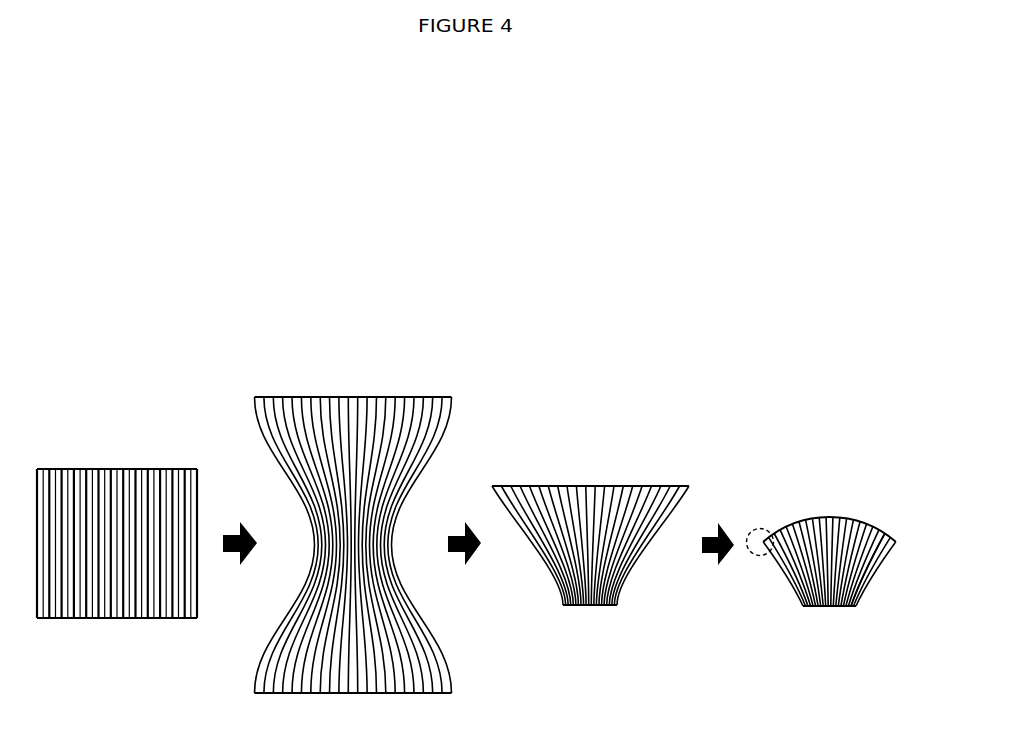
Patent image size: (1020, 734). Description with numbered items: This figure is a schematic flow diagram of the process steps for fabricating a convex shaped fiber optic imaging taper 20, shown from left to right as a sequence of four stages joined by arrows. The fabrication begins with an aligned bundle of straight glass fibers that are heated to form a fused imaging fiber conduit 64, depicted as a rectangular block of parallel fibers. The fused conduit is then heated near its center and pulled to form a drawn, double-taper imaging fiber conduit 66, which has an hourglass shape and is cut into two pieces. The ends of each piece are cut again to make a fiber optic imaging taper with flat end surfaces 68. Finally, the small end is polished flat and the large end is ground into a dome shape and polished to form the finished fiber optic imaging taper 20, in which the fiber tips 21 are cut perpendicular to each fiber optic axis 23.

The fused imaging fiber conduit 64 is at (121, 448).
The drawn, double-taper imaging fiber conduit 66 is at (349, 373).
The fiber optic imaging taper with flat end surfaces 68 is at (594, 451).
The convex shaped fiber optic imaging taper 20 is at (827, 451).
The fiber tips 21 is at (765, 527).
The fiber optic axis 23 is at (858, 545).